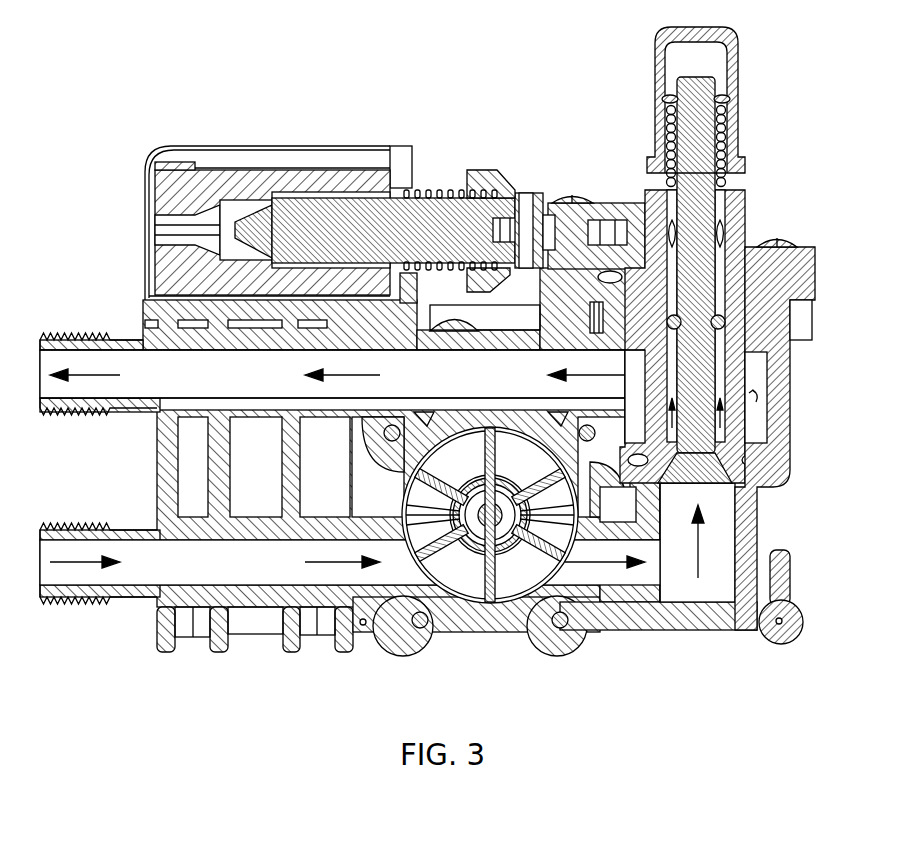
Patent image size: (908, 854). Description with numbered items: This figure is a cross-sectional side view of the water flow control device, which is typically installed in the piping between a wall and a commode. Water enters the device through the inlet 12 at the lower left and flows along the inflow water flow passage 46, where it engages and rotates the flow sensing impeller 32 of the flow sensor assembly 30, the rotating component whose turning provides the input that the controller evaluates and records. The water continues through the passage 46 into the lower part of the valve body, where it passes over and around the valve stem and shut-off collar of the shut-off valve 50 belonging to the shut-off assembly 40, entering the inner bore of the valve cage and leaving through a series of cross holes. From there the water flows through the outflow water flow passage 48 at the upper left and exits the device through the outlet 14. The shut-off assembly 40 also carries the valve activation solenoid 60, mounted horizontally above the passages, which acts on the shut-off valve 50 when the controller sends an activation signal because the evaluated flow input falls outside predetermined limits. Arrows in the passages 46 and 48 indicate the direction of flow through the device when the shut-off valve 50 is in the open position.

The inlet 12 is at (102, 522).
The outlet 14 is at (102, 332).
The flow sensor assembly 30 is at (418, 572).
The flow sensing impeller 32 is at (492, 595).
The shut-off assembly 40 is at (788, 388).
The inflow water flow passage 46 is at (125, 577).
The outflow water flow passage 48 is at (140, 353).
The shut-off valve 50 is at (760, 312).
The valve activation solenoid 60 is at (437, 190).